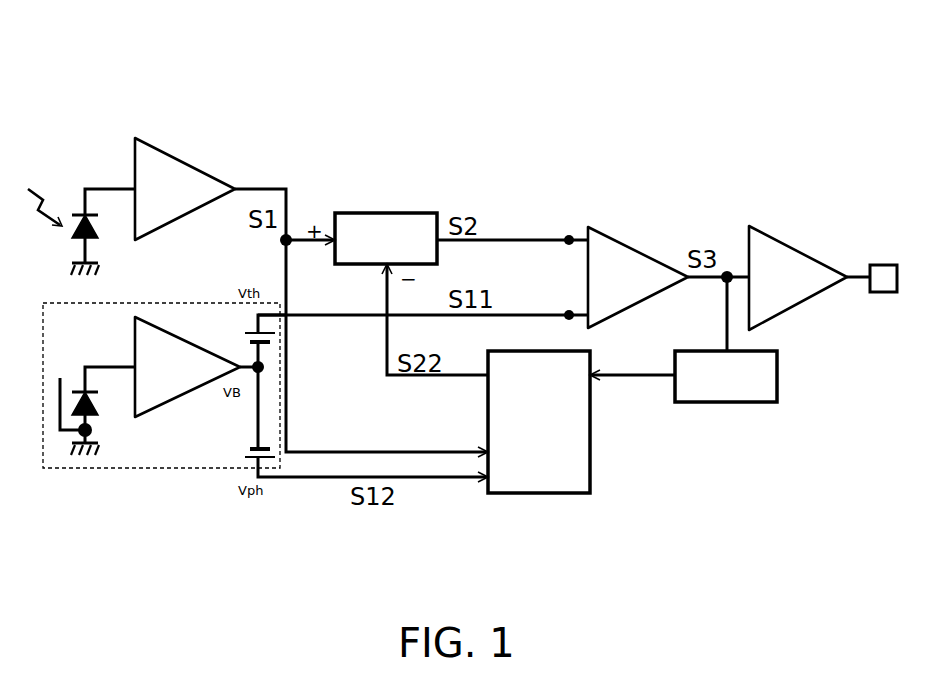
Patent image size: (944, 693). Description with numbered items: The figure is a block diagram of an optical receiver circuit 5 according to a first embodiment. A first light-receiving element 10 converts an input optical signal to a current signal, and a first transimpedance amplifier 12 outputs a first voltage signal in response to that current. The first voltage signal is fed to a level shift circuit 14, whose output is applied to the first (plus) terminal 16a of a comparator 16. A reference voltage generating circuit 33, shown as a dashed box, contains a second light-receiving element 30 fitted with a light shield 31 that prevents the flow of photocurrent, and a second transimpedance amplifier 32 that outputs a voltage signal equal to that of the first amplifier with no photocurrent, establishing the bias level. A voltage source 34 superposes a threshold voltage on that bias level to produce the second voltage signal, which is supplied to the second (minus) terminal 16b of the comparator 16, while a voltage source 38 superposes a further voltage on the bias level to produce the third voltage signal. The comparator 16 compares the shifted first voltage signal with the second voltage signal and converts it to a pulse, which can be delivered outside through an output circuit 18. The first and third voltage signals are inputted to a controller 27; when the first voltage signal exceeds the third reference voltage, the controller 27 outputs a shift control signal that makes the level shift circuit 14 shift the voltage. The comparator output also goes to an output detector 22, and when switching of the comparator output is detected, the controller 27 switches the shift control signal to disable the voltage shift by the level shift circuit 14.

The optical receiver circuit 5 is at (433, 106).
The first light-receiving element 10 is at (68, 237).
The first transimpedance amplifier 12 is at (173, 165).
The level shift circuit 14 is at (383, 216).
The comparator 16 is at (625, 253).
The first (plus) terminal 16a is at (569, 234).
The second (minus) terminal 16b is at (567, 309).
The output circuit 18 is at (785, 260).
The output detector 22 is at (737, 393).
The controller 27 is at (537, 472).
The second light-receiving element 30 is at (97, 408).
The light shield 31 is at (55, 400).
The second transimpedance amplifier 32 is at (162, 333).
The reference voltage generating circuit 33 is at (163, 468).
The voltage source 34 is at (243, 340).
The voltage source 38 is at (243, 452).